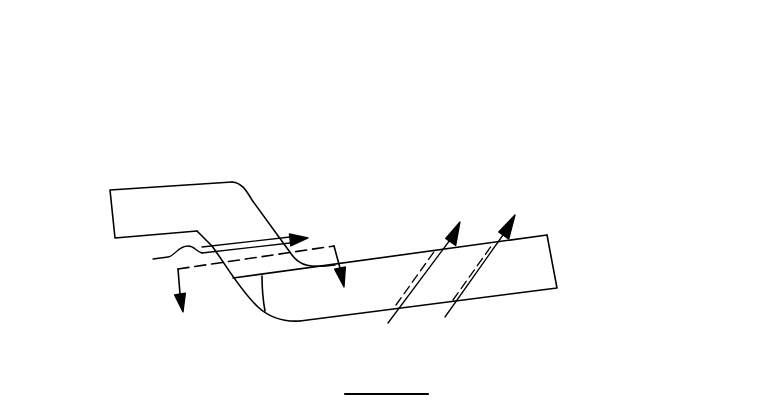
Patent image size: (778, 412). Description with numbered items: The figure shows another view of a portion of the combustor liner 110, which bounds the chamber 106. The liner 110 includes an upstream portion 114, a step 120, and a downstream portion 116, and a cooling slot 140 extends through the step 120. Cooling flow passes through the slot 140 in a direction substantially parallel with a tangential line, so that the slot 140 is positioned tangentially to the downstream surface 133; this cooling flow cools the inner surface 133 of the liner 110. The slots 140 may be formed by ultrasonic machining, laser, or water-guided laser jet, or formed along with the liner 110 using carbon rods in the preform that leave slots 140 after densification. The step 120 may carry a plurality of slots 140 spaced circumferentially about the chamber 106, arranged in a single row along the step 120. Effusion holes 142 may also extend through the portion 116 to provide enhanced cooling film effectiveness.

The chamber 106 is at (435, 181).
The liner 110 is at (247, 162).
The upper plate portion 114 is at (138, 205).
The portion 116 is at (522, 277).
The step 120 is at (250, 223).
The downstream surface 133 is at (533, 235).
The cooling slot 140 is at (262, 302).
The effusion holes 142 is at (414, 295).